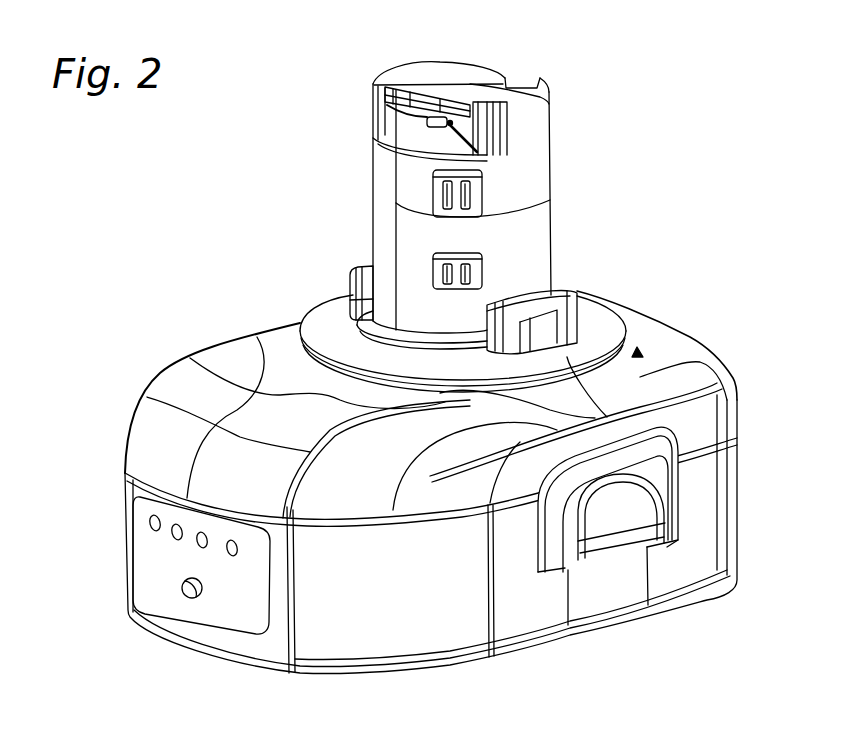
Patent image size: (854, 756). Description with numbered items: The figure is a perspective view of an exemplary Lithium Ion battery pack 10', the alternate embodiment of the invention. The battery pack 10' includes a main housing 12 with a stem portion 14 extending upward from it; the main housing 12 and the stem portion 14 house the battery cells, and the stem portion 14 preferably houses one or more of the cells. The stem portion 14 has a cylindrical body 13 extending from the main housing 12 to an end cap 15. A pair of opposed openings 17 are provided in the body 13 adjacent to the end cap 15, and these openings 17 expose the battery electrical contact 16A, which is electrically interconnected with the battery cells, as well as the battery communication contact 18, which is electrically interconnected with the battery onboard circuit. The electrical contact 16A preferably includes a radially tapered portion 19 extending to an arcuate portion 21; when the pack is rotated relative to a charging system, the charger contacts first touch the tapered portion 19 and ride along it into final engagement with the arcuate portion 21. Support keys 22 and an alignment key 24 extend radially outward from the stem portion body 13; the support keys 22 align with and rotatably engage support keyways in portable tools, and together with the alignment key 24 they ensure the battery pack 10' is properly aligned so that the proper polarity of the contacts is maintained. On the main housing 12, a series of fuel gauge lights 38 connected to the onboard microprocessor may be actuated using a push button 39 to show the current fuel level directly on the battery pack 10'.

The battery pack 10' is at (403, 341).
The main housing 12 is at (665, 337).
The cylindrical body 13 is at (540, 123).
The stem portion 14 is at (550, 224).
The end cap 15 is at (407, 70).
The battery electrical contact 16A is at (388, 108).
The opening 17 is at (423, 147).
The battery communication contact 18 is at (515, 83).
The radially tapered portion 19 is at (440, 107).
The arcuate portion 21 is at (403, 120).
The support key 22 is at (483, 190).
The alignment key 24 is at (552, 152).
The fuel gauge lights 38 is at (165, 547).
The push button 39 is at (186, 594).